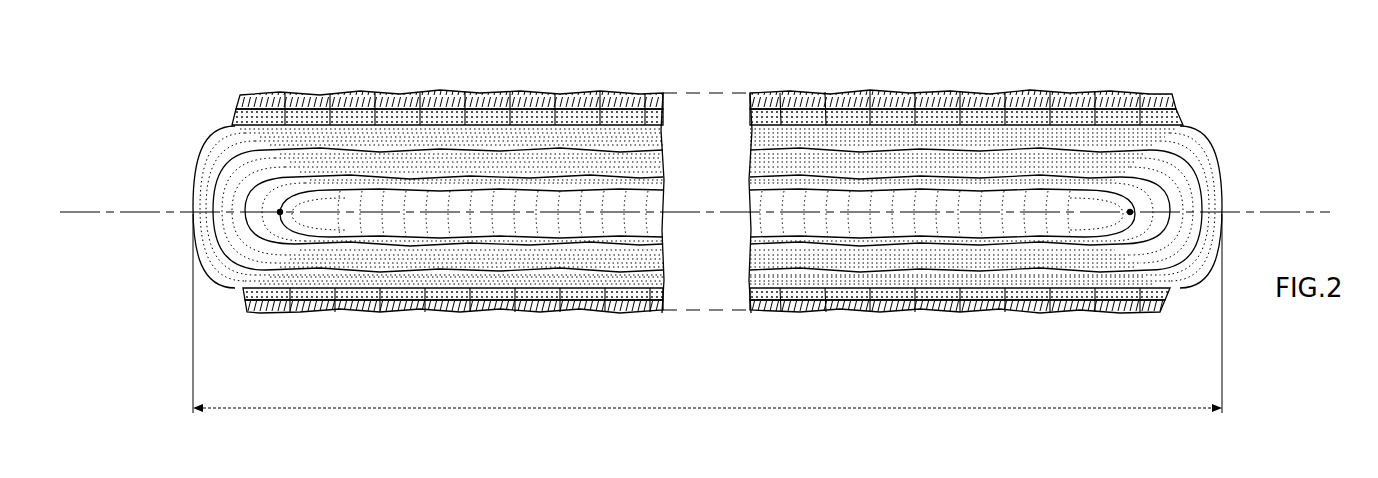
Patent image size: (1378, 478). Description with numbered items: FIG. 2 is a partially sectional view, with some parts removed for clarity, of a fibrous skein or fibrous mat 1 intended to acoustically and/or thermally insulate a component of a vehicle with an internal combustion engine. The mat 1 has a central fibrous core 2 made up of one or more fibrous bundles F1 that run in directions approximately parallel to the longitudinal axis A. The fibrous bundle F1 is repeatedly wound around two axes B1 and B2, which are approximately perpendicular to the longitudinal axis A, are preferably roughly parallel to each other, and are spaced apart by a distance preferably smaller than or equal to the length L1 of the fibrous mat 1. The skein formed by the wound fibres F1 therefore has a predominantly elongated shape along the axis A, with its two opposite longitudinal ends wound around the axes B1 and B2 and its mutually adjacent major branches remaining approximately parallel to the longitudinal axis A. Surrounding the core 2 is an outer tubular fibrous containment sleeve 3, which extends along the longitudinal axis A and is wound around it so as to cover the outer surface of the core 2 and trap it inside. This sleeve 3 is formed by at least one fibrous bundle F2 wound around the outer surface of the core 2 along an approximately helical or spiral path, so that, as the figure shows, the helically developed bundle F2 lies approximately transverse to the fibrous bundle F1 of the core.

The fibrous mat 1 is at (205, 103).
The central fibrous core 2 is at (1200, 151).
The outer tubular fibrous containment sleeve 3 is at (1176, 98).
The longitudinal axis A is at (118, 211).
The fibrous bundle F1 is at (972, 179).
The fibrous bundle F2 is at (403, 91).
The axis B1 is at (280, 215).
The axis B2 is at (1131, 215).
The length of the fibrous mat L1 is at (707, 313).